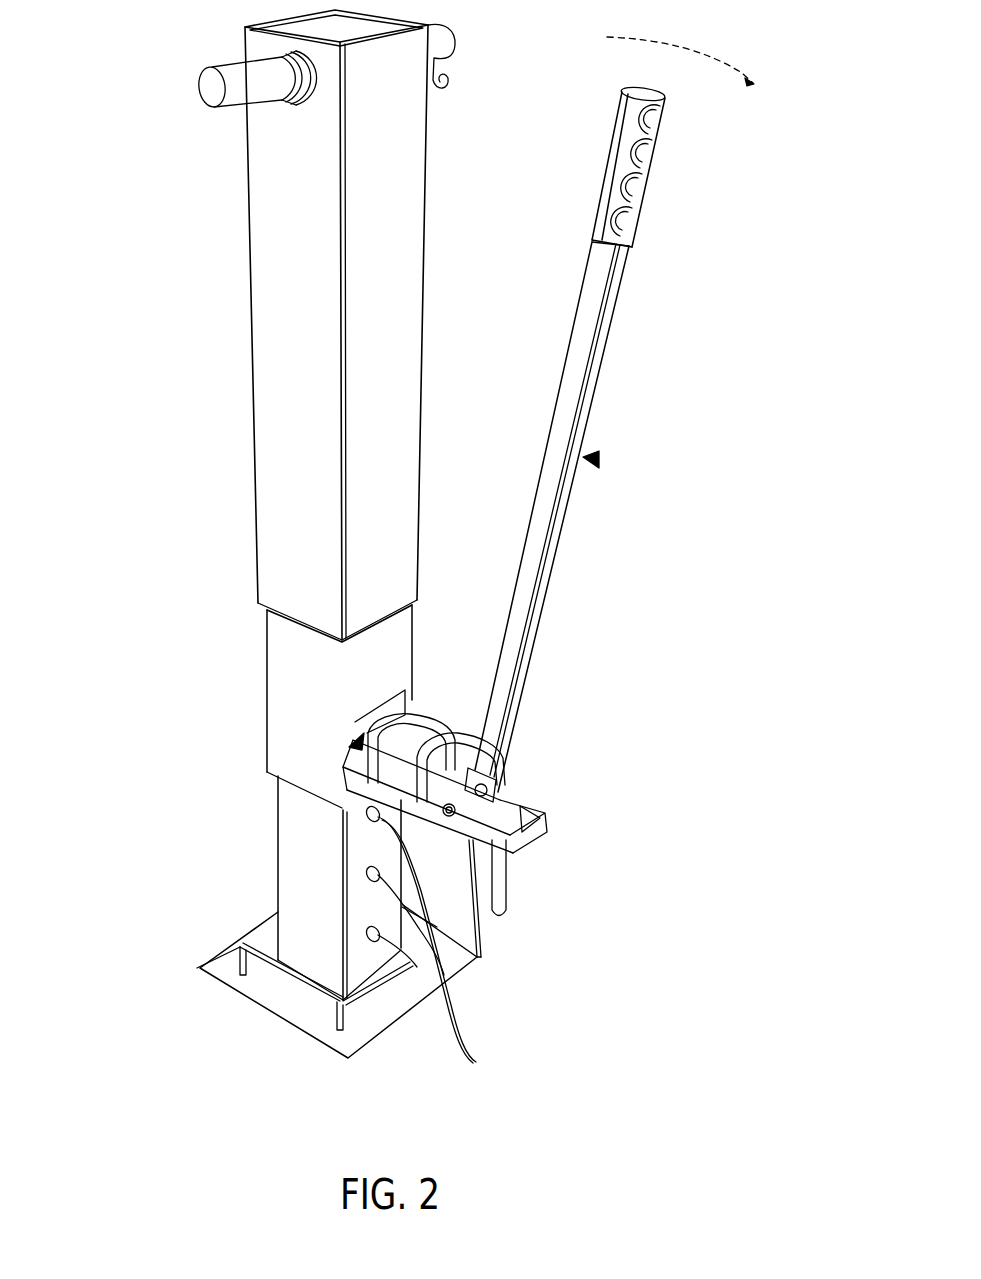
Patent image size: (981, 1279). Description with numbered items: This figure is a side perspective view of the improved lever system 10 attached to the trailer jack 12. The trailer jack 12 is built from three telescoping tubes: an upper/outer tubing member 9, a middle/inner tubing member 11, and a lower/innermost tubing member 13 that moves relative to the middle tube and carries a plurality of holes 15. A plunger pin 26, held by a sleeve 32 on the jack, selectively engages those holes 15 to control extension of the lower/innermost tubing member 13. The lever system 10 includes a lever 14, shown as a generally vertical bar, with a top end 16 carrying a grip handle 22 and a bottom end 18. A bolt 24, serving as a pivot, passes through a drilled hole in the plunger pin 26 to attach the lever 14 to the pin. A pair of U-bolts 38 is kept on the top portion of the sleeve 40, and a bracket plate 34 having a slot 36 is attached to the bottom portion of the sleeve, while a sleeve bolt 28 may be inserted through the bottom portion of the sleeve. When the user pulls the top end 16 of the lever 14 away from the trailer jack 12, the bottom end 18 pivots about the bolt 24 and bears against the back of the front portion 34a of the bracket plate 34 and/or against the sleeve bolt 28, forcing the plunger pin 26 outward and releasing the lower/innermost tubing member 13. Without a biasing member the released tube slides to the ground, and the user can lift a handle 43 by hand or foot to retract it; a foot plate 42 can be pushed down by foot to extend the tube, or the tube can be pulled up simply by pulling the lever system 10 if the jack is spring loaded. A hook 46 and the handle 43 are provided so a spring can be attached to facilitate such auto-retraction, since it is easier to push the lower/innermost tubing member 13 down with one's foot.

The upper/outer tubing member 9 is at (283, 407).
The lever system 10 is at (599, 460).
The middle/inner tubing member 11 is at (292, 655).
The trailer jack 12 is at (245, 200).
The lower/innermost tubing member 13 is at (310, 872).
The lever 14 is at (560, 540).
The holes 15 is at (445, 947).
The top end 16 is at (625, 246).
The bottom end 18 is at (479, 957).
The grip handle 22 is at (625, 171).
The bolt 24 is at (484, 785).
The plunger pin 26 is at (506, 893).
The sleeve bolt 28 is at (484, 758).
The sleeve 32 is at (355, 742).
The bracket plate 34 is at (522, 838).
The front portion 34a is at (428, 822).
The slot 36 is at (522, 812).
The U-bolts 38 is at (412, 708).
The top portion of the sleeve 40 is at (350, 773).
The foot plate 42 is at (260, 1000).
The handle 43 is at (235, 962).
The hook 46 is at (452, 68).